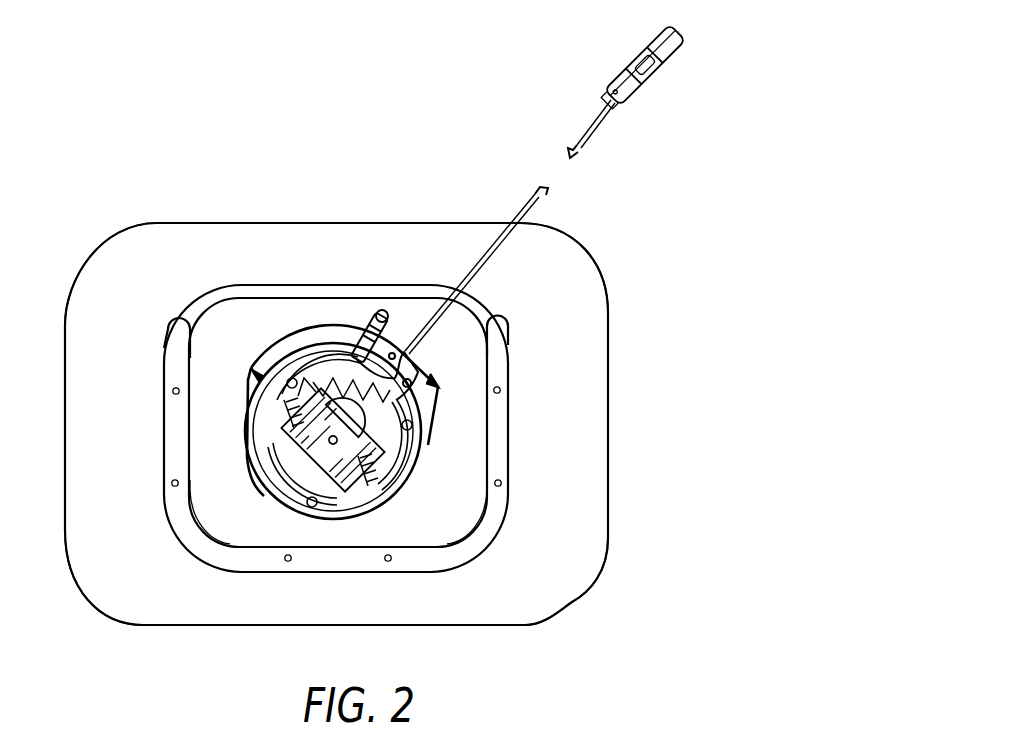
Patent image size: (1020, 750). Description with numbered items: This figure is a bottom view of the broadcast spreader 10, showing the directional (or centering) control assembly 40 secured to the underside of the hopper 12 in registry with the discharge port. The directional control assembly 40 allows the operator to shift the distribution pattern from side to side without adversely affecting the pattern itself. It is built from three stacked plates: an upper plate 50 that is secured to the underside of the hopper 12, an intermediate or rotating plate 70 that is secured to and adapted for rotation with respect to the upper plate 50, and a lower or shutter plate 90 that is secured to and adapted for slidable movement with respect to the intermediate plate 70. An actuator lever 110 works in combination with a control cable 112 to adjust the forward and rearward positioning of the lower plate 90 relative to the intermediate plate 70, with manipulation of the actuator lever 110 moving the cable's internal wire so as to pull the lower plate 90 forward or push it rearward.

The broadcast spreader 10 is at (100, 190).
The hopper 12 is at (583, 258).
The directional control assembly 40 is at (268, 322).
The upper plate 50 is at (424, 445).
The intermediate plate 70 is at (357, 497).
The lower plate 90 is at (337, 467).
The actuator lever 110 is at (622, 72).
The control cable 112 is at (596, 118).